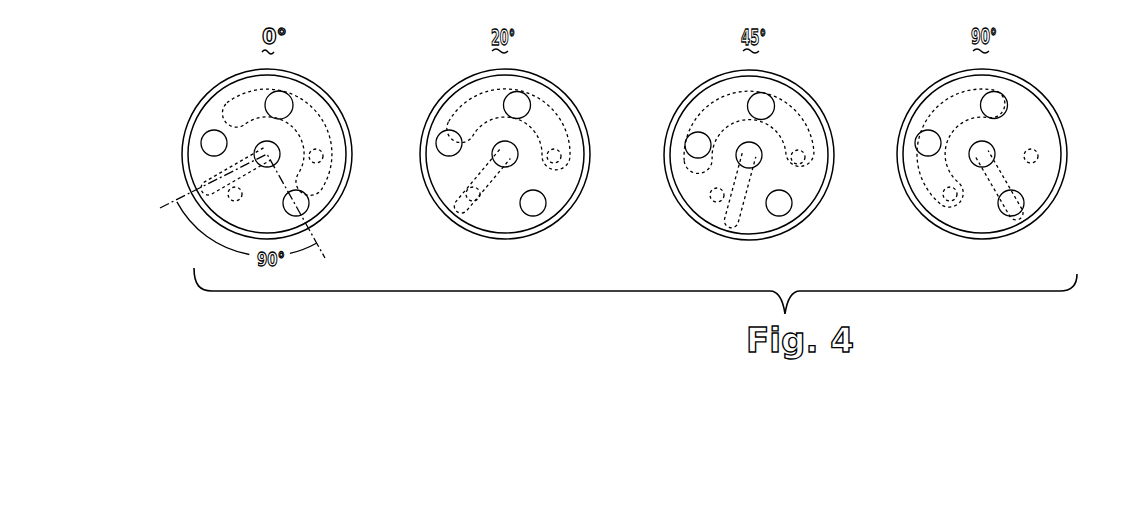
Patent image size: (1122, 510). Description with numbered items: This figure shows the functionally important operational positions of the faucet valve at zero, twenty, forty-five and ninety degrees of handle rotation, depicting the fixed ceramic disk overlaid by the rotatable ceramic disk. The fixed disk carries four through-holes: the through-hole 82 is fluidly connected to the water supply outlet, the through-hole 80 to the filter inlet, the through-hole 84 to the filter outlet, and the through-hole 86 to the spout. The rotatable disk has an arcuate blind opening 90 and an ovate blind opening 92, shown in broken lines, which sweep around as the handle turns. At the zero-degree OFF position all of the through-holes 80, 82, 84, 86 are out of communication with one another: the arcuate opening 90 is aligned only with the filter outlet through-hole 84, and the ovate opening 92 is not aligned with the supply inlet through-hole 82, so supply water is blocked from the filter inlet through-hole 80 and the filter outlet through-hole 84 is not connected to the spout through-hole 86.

The through-hole 80 is at (279, 147).
The through-hole 82 is at (305, 205).
The through-hole 84 is at (289, 95).
The through-hole 86 is at (210, 130).
The arcuate blind opening 90 is at (343, 168).
The ovate blind opening 92 is at (205, 203).